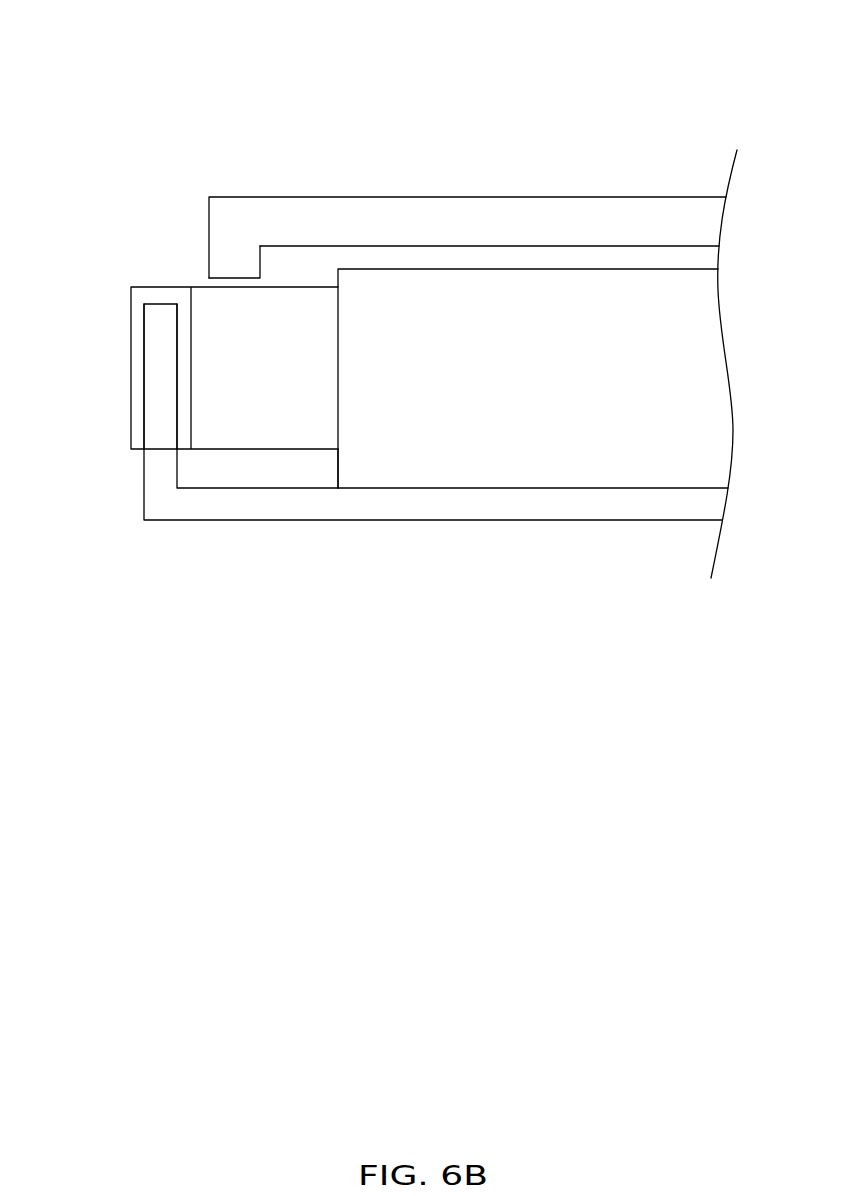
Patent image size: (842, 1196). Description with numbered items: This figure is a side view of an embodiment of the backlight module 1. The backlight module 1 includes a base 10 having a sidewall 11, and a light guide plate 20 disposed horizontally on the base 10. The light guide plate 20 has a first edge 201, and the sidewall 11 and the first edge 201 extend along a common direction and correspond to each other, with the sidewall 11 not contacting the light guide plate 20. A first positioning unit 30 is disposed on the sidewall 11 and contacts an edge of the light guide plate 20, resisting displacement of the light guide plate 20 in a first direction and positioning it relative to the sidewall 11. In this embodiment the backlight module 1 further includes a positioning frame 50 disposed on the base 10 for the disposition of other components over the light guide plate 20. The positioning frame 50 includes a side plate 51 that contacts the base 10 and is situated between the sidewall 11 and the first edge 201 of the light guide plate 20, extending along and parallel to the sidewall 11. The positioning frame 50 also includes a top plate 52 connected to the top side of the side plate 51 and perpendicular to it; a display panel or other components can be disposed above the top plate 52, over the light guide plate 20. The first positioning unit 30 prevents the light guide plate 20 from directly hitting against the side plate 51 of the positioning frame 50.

The backlight module 1 is at (155, 43).
The base 10 is at (128, 527).
The sidewall 11 is at (159, 391).
The light guide plate 20 is at (527, 438).
The first edge 201 is at (338, 470).
The first positioning unit 30 is at (118, 343).
The positioning frame 50 is at (280, 172).
The side plate 51 is at (222, 269).
The top plate 52 is at (479, 215).